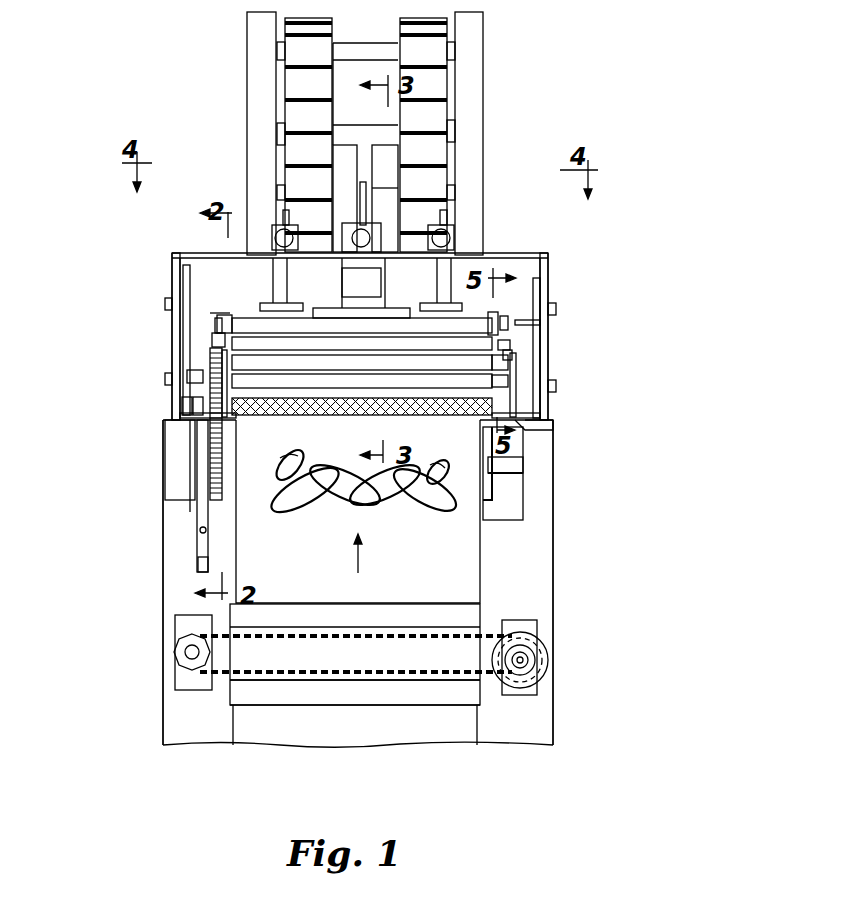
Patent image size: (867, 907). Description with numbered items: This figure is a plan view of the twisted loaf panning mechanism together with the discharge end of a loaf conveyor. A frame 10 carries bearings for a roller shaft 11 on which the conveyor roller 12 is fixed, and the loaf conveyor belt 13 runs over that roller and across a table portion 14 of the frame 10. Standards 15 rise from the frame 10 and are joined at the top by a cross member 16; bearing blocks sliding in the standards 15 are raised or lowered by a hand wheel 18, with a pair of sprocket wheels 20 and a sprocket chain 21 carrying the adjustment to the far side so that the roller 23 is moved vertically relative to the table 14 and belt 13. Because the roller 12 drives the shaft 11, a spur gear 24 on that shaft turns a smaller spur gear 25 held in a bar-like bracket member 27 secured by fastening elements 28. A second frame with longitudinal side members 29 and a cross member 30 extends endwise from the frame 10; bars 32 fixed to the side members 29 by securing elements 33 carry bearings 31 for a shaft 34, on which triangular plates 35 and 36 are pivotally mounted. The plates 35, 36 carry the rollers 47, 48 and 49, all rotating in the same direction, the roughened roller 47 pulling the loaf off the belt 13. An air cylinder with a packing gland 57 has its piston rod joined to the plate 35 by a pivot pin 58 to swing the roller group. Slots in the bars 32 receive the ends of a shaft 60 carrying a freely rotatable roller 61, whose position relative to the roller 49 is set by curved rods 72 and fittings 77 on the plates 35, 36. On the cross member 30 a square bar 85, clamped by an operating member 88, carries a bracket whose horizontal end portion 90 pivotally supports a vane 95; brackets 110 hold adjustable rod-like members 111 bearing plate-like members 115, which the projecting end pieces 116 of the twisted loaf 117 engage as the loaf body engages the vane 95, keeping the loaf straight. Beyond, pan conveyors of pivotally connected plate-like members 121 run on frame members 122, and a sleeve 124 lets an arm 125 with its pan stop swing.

The frame 10 is at (203, 540).
The roller shaft 11 is at (190, 470).
The conveyor roller 12 is at (487, 490).
The loaf conveyor belt 13 is at (470, 588).
The table portion 14 is at (165, 585).
The standards 15 is at (175, 660).
The cross member 16 is at (400, 670).
The hand wheel 18 is at (532, 672).
The sprocket wheels 20 is at (228, 655).
The sprocket chain 21 is at (378, 665).
The roller 23 is at (335, 700).
The spur gear 24 is at (200, 478).
The smaller spur gear 25 is at (224, 430).
The bar-like bracket member 27 is at (202, 528).
The fastening elements 28 is at (200, 555).
The side members 29 is at (178, 333).
The cross member 30 is at (505, 255).
The bearings 31 is at (180, 410).
The bars 32 is at (180, 283).
The securing elements 33 is at (165, 304).
The shaft 34 is at (185, 428).
The triangular plate 35 is at (195, 365).
The triangular plate 36 is at (512, 372).
The roller 47 is at (432, 415).
The roller 48 is at (385, 380).
The roller 49 is at (352, 360).
The packing gland 57 is at (195, 400).
The pivot pin 58 is at (200, 385).
The shaft 60 is at (230, 325).
The roller 61 is at (540, 283).
The curved rod 72 is at (216, 316).
The fitting 77 is at (222, 335).
The bar 85 is at (400, 188).
The operating member 88 is at (368, 232).
The horizontally extending upper end portion 90 is at (352, 278).
The vane 95 is at (335, 312).
The brackets 110 is at (282, 228).
The rod-like members 111 is at (286, 212).
The plate-like members 115 is at (265, 302).
The projecting end pieces 116 is at (292, 462).
The twisted loaf 117 is at (375, 502).
The plate-like members 121 is at (292, 48).
The longitudinally extending frame members 122 is at (272, 82).
The sleeve 124 is at (388, 132).
The arm 125 is at (410, 160).